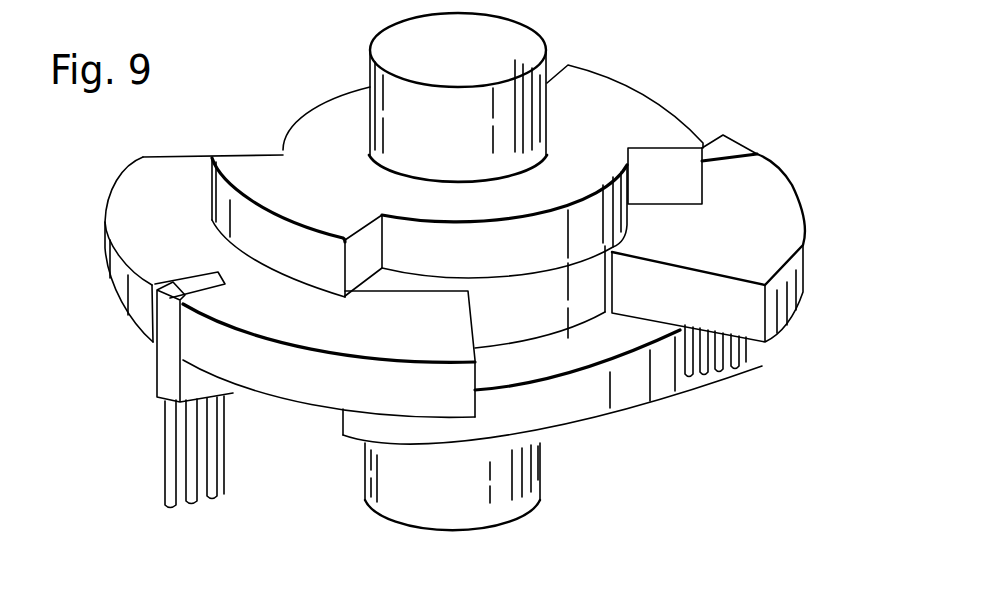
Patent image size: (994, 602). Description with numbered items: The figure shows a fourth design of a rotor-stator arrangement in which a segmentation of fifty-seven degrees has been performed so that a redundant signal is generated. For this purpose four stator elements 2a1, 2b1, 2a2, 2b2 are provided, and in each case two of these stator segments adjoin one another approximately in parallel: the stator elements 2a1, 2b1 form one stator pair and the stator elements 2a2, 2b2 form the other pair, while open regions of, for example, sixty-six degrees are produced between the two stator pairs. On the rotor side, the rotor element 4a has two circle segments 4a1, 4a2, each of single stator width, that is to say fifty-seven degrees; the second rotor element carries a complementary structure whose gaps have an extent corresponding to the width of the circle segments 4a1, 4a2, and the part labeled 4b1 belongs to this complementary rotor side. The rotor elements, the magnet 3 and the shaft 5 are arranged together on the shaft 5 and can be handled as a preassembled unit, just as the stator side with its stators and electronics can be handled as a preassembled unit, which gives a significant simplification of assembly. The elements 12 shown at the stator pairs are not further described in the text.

The rotor element 4a is at (328, 110).
The segment of rotor element 4a1 is at (617, 92).
The segment of rotor element 4a2 is at (262, 197).
The stator element 2a1 is at (715, 132).
The stator element 2a2 is at (135, 298).
The stator element 2b1 is at (750, 325).
The stator element 2b2 is at (308, 375).
The lower flange 4b1 is at (640, 392).
The terminal pins 12 is at (737, 150).
The magnet 3 is at (537, 318).
The shaft 5 is at (520, 510).